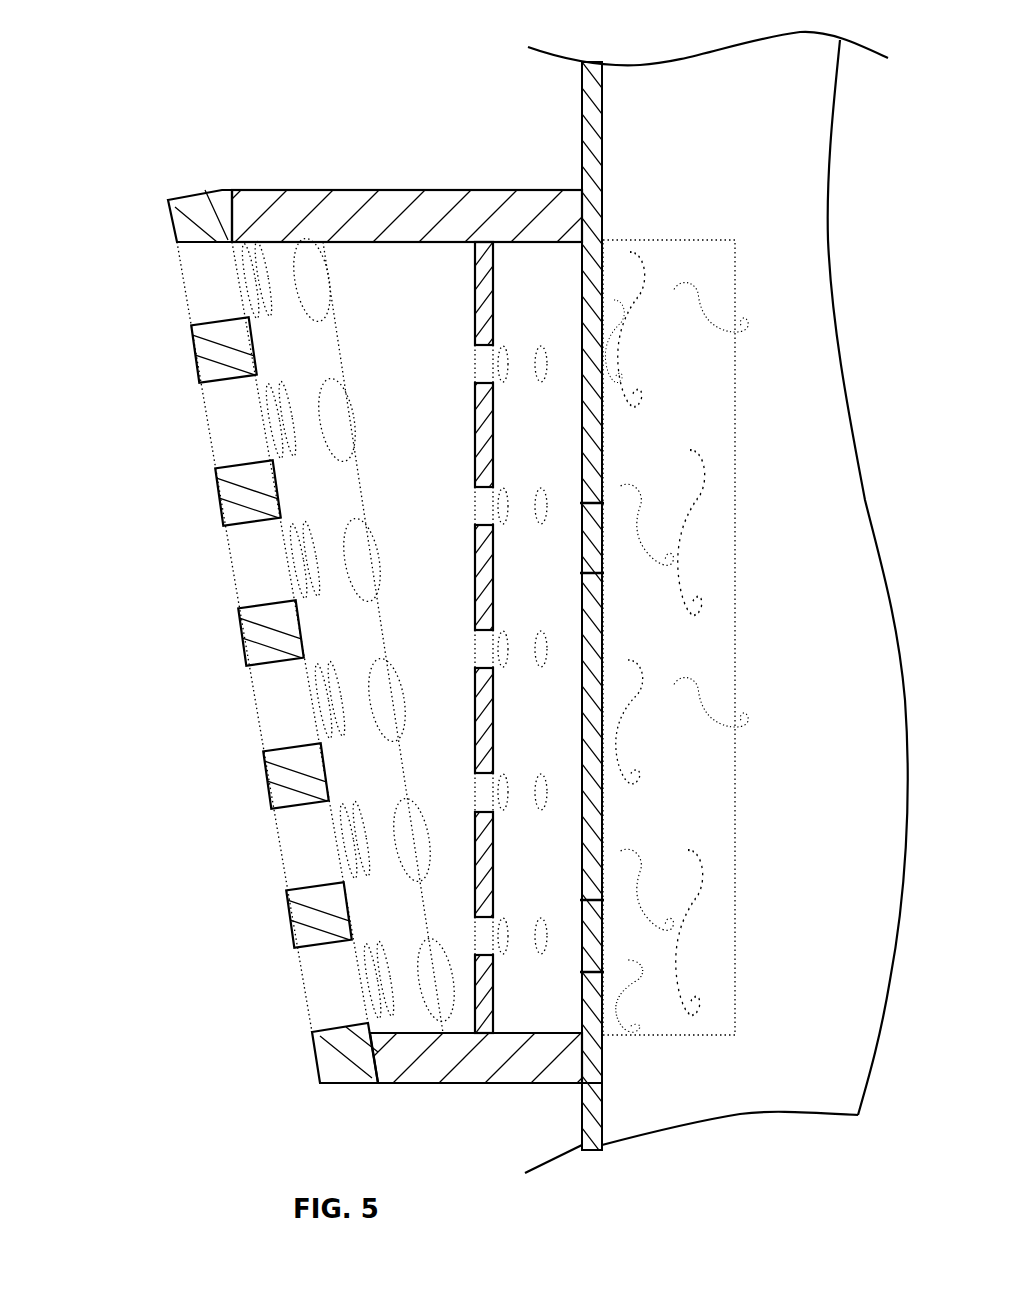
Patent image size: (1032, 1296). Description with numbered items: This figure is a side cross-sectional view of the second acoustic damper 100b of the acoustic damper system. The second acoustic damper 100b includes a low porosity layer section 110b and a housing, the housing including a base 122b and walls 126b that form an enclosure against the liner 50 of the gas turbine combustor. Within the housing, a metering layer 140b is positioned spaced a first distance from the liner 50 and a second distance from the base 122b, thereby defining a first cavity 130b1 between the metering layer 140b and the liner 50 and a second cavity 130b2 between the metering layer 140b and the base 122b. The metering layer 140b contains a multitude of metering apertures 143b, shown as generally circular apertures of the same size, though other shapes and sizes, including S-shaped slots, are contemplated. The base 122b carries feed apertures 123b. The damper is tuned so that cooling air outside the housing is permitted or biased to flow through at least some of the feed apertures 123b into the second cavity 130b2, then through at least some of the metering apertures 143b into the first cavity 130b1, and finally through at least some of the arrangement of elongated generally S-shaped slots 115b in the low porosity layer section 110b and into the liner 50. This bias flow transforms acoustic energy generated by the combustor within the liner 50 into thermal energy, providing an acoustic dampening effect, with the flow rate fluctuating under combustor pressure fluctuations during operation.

The second acoustic damper 100b is at (140, 152).
The low porosity layer section 110b is at (663, 240).
The arrangement of elongated generally S-shaped slots 115b is at (668, 300).
The base 122b is at (220, 495).
The feed apertures 123b is at (190, 302).
The support bars 126b is at (345, 198).
The first cavity 130b1 is at (558, 1027).
The second cavity 130b2 is at (407, 1028).
The metering layer 140b is at (473, 447).
The metering apertures 143b is at (478, 360).
The liner 50 is at (582, 1143).